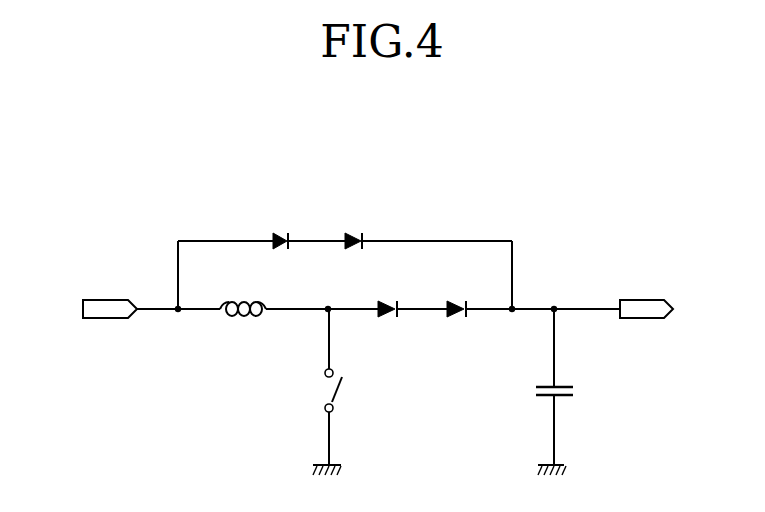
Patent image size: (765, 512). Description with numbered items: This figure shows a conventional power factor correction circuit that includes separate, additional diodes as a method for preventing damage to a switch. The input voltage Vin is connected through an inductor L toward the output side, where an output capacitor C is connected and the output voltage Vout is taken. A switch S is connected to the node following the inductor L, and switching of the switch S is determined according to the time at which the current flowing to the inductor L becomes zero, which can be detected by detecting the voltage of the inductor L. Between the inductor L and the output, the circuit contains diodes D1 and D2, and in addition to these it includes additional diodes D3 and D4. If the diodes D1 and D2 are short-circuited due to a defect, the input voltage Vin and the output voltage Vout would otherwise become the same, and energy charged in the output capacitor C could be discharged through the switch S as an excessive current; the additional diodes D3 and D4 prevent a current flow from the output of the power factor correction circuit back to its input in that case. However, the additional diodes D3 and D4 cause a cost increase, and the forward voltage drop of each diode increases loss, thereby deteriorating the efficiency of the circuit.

The input voltage Vin is at (84, 310).
The output voltage Vout is at (673, 310).
The inductor L is at (243, 293).
The diode D1 is at (388, 293).
The diode D2 is at (280, 225).
The additional diode D3 is at (457, 293).
The additional diode D4 is at (355, 225).
The switch S is at (321, 392).
The output capacitor C is at (566, 392).